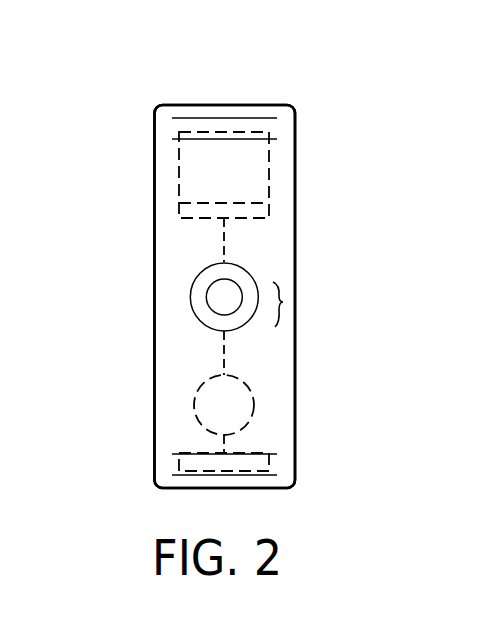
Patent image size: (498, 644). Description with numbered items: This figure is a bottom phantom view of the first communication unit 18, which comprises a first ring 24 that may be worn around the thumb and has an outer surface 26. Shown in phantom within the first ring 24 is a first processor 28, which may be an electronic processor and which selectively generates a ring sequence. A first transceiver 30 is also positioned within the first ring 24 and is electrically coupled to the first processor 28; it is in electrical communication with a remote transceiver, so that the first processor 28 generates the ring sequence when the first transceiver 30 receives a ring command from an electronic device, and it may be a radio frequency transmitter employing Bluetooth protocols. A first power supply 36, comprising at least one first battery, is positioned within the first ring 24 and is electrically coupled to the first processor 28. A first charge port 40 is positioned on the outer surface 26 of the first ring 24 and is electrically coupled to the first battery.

The first communication unit 18 is at (352, 108).
The first ring 24 is at (154, 118).
The outer surface 26 is at (283, 302).
The first processor 28 is at (253, 398).
The first transceiver 30 is at (269, 459).
The first power supply 36 is at (198, 276).
The first charge port 40 is at (207, 298).